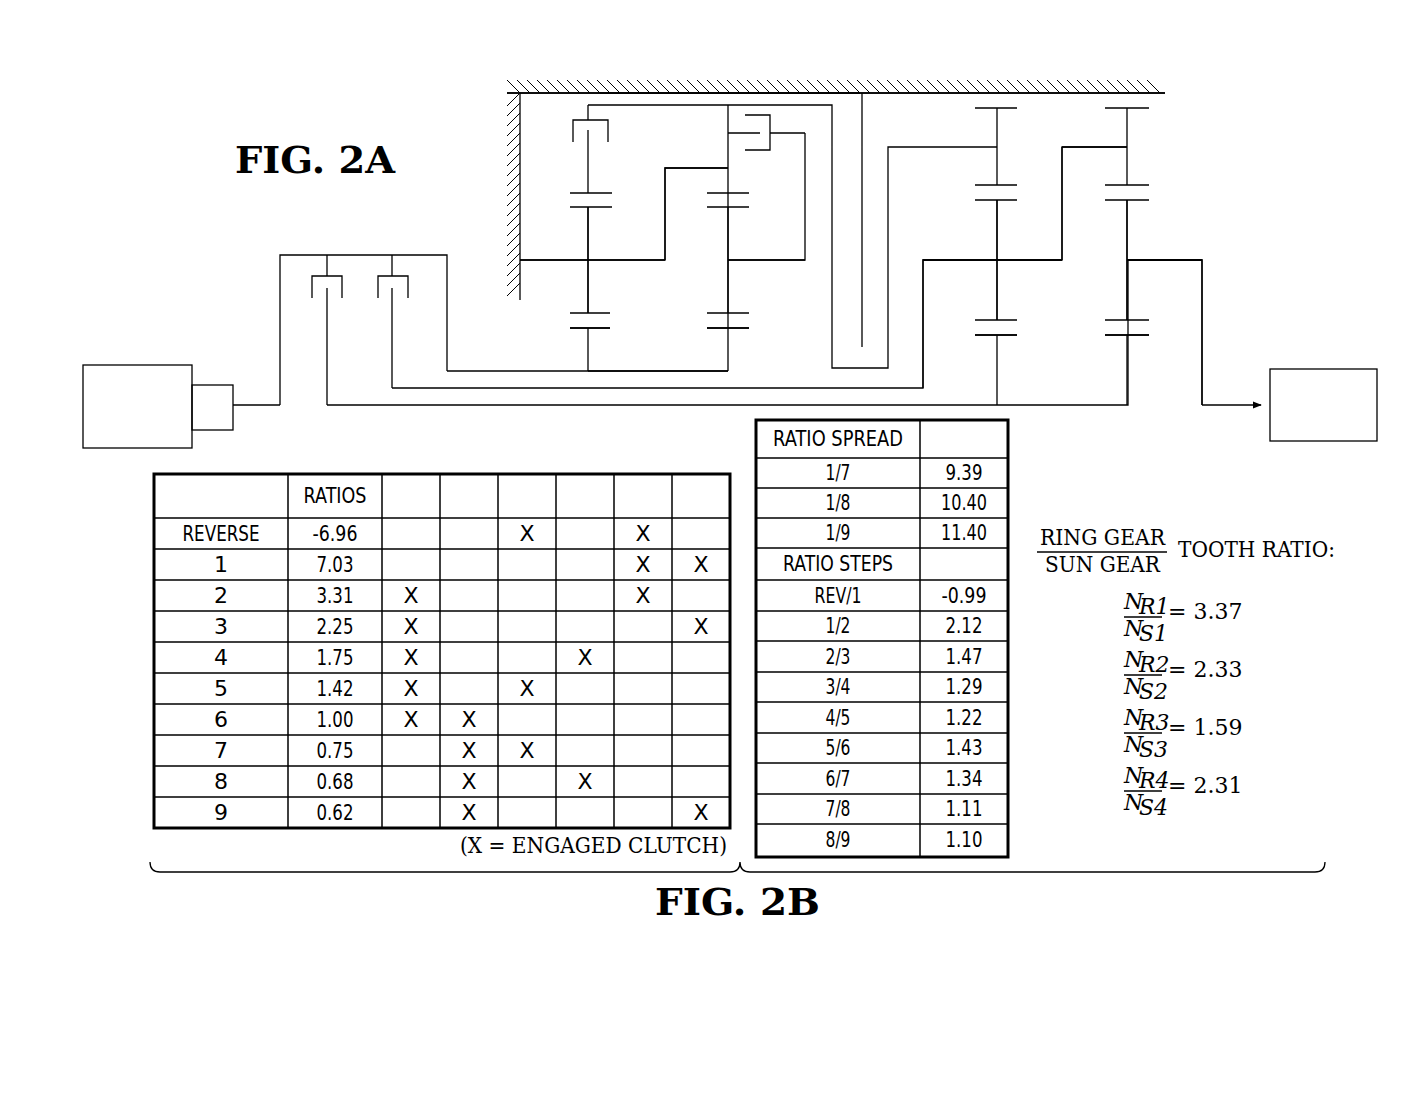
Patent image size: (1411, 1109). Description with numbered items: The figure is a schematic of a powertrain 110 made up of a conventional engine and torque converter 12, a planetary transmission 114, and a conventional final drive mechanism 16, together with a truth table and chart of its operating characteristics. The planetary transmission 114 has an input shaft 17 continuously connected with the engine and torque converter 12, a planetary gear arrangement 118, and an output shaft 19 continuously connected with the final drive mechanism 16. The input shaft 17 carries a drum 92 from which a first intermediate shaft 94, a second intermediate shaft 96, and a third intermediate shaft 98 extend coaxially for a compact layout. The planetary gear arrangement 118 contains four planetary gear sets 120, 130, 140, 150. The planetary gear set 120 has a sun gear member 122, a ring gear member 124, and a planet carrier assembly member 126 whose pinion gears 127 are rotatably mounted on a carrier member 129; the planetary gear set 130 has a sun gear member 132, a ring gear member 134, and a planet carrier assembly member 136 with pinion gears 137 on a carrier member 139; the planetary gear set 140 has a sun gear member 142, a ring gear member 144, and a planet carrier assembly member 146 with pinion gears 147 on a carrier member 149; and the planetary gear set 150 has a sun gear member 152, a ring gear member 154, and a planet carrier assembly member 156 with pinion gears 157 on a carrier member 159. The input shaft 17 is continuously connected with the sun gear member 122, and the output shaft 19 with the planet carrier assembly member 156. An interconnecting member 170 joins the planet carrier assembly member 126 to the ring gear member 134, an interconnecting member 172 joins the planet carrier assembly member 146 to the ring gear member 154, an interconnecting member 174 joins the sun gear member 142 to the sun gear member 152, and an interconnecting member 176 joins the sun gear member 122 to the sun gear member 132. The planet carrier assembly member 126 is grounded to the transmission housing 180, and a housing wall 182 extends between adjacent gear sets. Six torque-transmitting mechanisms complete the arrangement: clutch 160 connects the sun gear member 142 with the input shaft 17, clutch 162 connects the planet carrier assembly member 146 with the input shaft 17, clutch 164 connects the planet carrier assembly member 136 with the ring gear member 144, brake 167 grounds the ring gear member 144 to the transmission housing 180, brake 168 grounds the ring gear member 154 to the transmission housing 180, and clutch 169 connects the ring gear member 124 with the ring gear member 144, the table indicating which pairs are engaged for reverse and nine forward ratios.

In FIG. 2A, the engine and torque converter 12 is at (157, 348).
In FIG. 2A, the final drive mechanism 16 is at (1305, 352).
In FIG. 2A, the input shaft 17 is at (263, 407).
In FIG. 2A, the output shaft 19 is at (1222, 407).
In FIG. 2A, the drum 92 is at (300, 252).
In FIG. 2A, the first intermediate shaft 94 is at (472, 372).
In FIG. 2A, the second intermediate shaft 96 is at (520, 388).
In FIG. 2A, the third intermediate shaft 98 is at (573, 405).
In FIG. 2A, the powertrain 110 is at (478, 112).
In FIG. 2A, the planetary transmission 114 is at (690, 82).
In FIG. 2A, the planetary gear arrangement 118 is at (1040, 80).
In FIG. 2A, the planetary gear set 120 is at (600, 336).
In FIG. 2A, the sun gear member 122 is at (577, 333).
In FIG. 2A, the ring gear member 124 is at (600, 192).
In FIG. 2A, the planet carrier assembly member 126 is at (555, 272).
In FIG. 2A, the pinion gears 127 is at (590, 293).
In FIG. 2A, the carrier member 129 is at (548, 260).
In FIG. 2A, the planetary gear set 130 is at (740, 336).
In FIG. 2A, the sun gear member 132 is at (717, 333).
In FIG. 2A, the ring gear member 134 is at (740, 192).
In FIG. 2A, the planet carrier assembly member 136 is at (763, 272).
In FIG. 2A, the pinion gears 137 is at (729, 244).
In FIG. 2A, the carrier member 139 is at (773, 262).
In FIG. 2A, the planetary gear set 140 is at (1008, 341).
In FIG. 2A, the sun gear member 142 is at (985, 338).
In FIG. 2A, the ring gear member 144 is at (1004, 184).
In FIG. 2A, the planet carrier assembly member 146 is at (955, 278).
In FIG. 2A, the pinion gears 147 is at (997, 240).
In FIG. 2A, the carrier member 149 is at (957, 258).
In FIG. 2A, the planetary gear set 150 is at (1140, 341).
In FIG. 2A, the sun gear member 152 is at (1122, 338).
In FIG. 2A, the ring gear member 154 is at (1136, 184).
In FIG. 2A, the planet carrier assembly member 156 is at (1165, 280).
In FIG. 2A, the pinion gears 157 is at (1128, 240).
In FIG. 2A, the carrier member 159 is at (1185, 258).
In FIG. 2A, the clutch 160 is at (318, 305).
In FIG. 2B, the clutch 160 is at (418, 651).
In FIG. 2A, the clutch 162 is at (385, 305).
In FIG. 2B, the clutch 162 is at (476, 651).
In FIG. 2A, the clutch 164 is at (780, 117).
In FIG. 2B, the clutch 164 is at (534, 651).
In FIG. 2A, the brake 167 is at (966, 102).
In FIG. 2B, the brake 167 is at (592, 651).
In FIG. 2A, the brake 168 is at (1156, 102).
In FIG. 2B, the brake 168 is at (650, 651).
In FIG. 2A, the clutch 169 is at (577, 147).
In FIG. 2B, the clutch 169 is at (708, 651).
In FIG. 2A, the interconnecting member 170 is at (685, 167).
In FIG. 2A, the interconnecting member 172 is at (1100, 147).
In FIG. 2A, the interconnecting member 174 is at (1065, 405).
In FIG. 2A, the interconnecting member 176 is at (715, 371).
In FIG. 2A, the transmission housing 180 is at (505, 195).
In FIG. 2A, the housing wall 182 is at (862, 120).